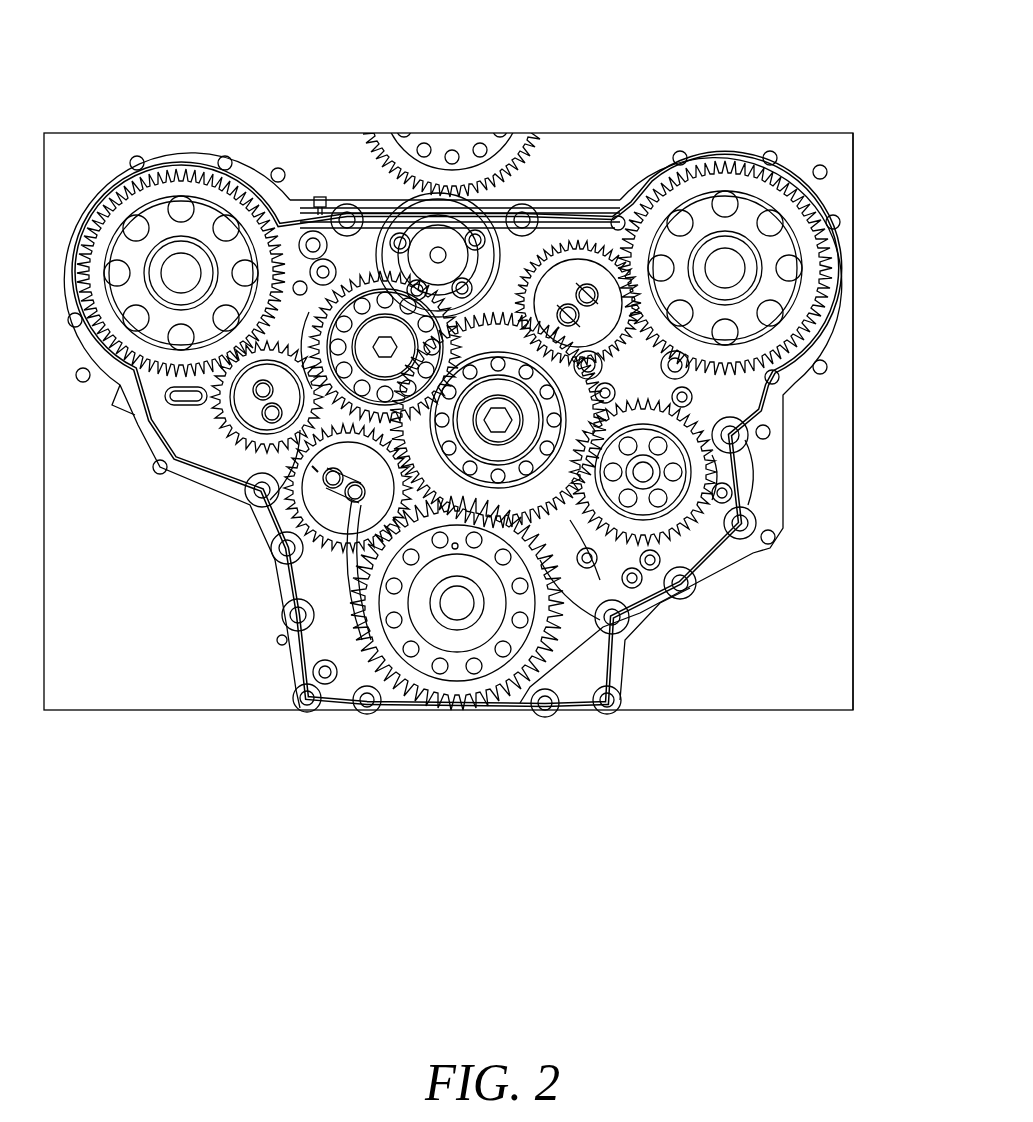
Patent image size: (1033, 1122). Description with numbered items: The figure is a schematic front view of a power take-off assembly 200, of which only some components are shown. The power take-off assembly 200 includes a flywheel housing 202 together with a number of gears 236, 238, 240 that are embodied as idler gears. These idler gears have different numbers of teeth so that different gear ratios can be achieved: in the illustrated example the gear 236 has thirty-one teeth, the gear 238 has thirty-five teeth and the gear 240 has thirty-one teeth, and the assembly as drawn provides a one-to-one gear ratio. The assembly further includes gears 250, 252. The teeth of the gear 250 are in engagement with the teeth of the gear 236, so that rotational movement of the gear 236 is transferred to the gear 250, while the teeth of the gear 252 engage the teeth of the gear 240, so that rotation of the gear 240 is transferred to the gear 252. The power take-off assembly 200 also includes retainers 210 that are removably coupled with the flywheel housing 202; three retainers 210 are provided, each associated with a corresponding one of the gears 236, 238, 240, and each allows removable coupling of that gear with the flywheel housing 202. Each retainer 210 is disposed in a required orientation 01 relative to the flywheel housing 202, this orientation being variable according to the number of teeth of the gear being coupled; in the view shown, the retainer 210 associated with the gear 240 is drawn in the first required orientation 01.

The power take-off assembly 200 is at (770, 40).
The required orientation 01 is at (885, 245).
The flywheel housing 202 is at (333, 203).
The retainer 210 is at (565, 298).
The gear 236 is at (228, 410).
The gear 238 is at (346, 513).
The gear 240 is at (580, 268).
The gear 250 is at (157, 183).
The gear 252 is at (690, 165).